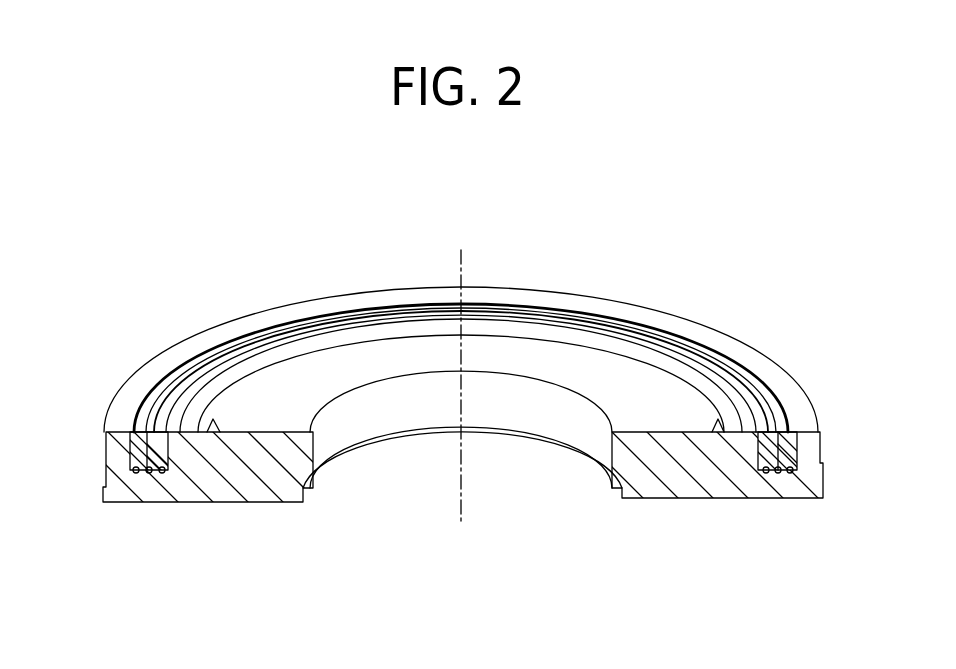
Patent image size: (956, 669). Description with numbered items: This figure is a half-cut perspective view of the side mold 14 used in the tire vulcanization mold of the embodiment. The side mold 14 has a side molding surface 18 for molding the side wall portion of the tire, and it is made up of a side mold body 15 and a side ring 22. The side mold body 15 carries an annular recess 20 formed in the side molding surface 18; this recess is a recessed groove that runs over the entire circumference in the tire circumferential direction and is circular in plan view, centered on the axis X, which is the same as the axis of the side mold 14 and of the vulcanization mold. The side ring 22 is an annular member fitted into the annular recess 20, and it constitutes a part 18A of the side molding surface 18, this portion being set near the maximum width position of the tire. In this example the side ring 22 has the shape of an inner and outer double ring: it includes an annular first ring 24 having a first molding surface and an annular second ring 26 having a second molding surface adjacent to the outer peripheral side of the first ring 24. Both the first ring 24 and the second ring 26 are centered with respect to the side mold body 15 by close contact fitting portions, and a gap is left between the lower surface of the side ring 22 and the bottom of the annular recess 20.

The side mold 14 is at (472, 187).
The side mold body 15 is at (588, 302).
The side molding surface 18 is at (474, 358).
The side molding surface 18A is at (750, 375).
The annular recess 20 is at (150, 473).
The side ring 22 is at (162, 320).
The first ring 24 is at (163, 440).
The second ring 26 is at (138, 452).
The axis X is at (465, 508).